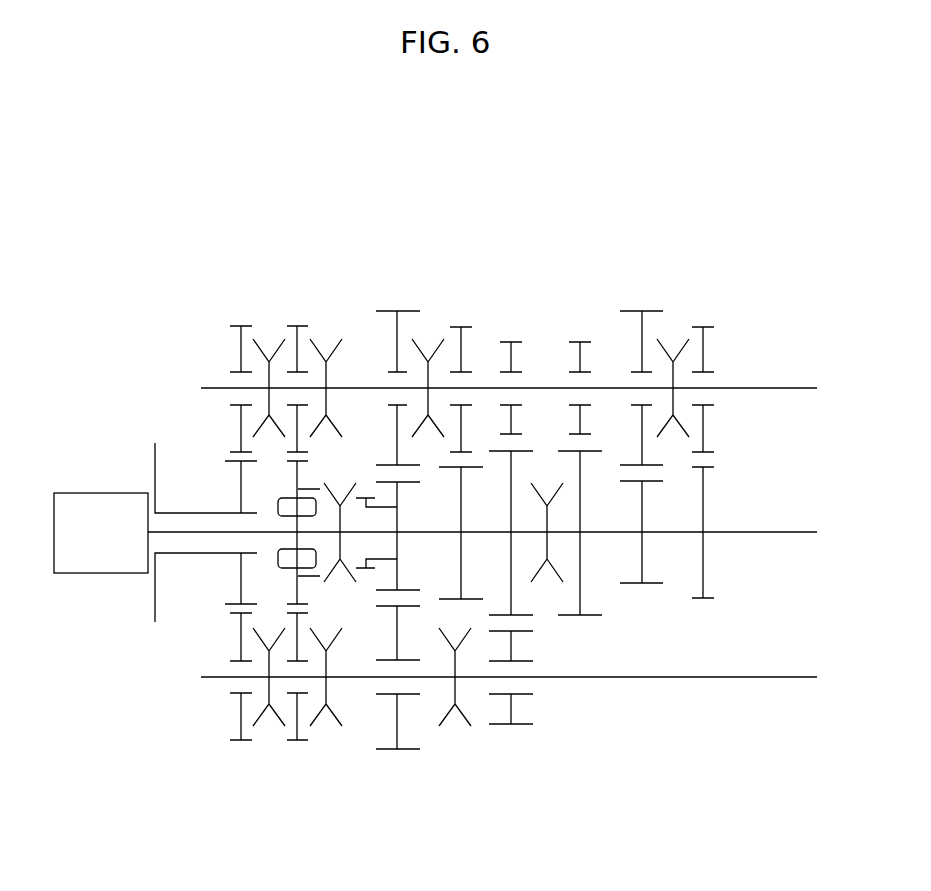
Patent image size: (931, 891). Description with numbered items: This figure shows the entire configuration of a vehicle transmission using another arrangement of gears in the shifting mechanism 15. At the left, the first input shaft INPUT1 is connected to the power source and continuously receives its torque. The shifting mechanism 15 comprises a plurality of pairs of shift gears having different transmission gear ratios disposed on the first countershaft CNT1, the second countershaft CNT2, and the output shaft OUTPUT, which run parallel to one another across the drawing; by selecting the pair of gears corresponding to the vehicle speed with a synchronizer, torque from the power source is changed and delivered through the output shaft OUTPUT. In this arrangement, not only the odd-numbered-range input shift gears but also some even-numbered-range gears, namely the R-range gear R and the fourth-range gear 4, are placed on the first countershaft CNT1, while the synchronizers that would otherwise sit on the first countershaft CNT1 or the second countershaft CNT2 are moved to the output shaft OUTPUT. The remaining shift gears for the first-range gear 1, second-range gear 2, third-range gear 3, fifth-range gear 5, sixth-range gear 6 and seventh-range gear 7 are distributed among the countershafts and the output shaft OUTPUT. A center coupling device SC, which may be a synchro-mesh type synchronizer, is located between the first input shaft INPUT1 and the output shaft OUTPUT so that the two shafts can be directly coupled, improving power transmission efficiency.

The shifting mechanism 15 is at (525, 268).
The first input shaft INPUT1 is at (208, 535).
The first countershaft CNT1 is at (777, 388).
The second countershaft CNT2 is at (777, 677).
The output shaft OUTPUT is at (777, 532).
The center coupling device SC is at (332, 574).
The first speed gear 1 is at (511, 377).
The second speed gear 2 is at (511, 691).
The third speed gear 3 is at (461, 379).
The fourth speed gear 4 is at (703, 378).
The fifth speed gear 5 is at (398, 376).
The sixth speed gear 6 is at (398, 691).
The seventh speed gear 7 is at (641, 376).
The reverse gear R is at (580, 377).